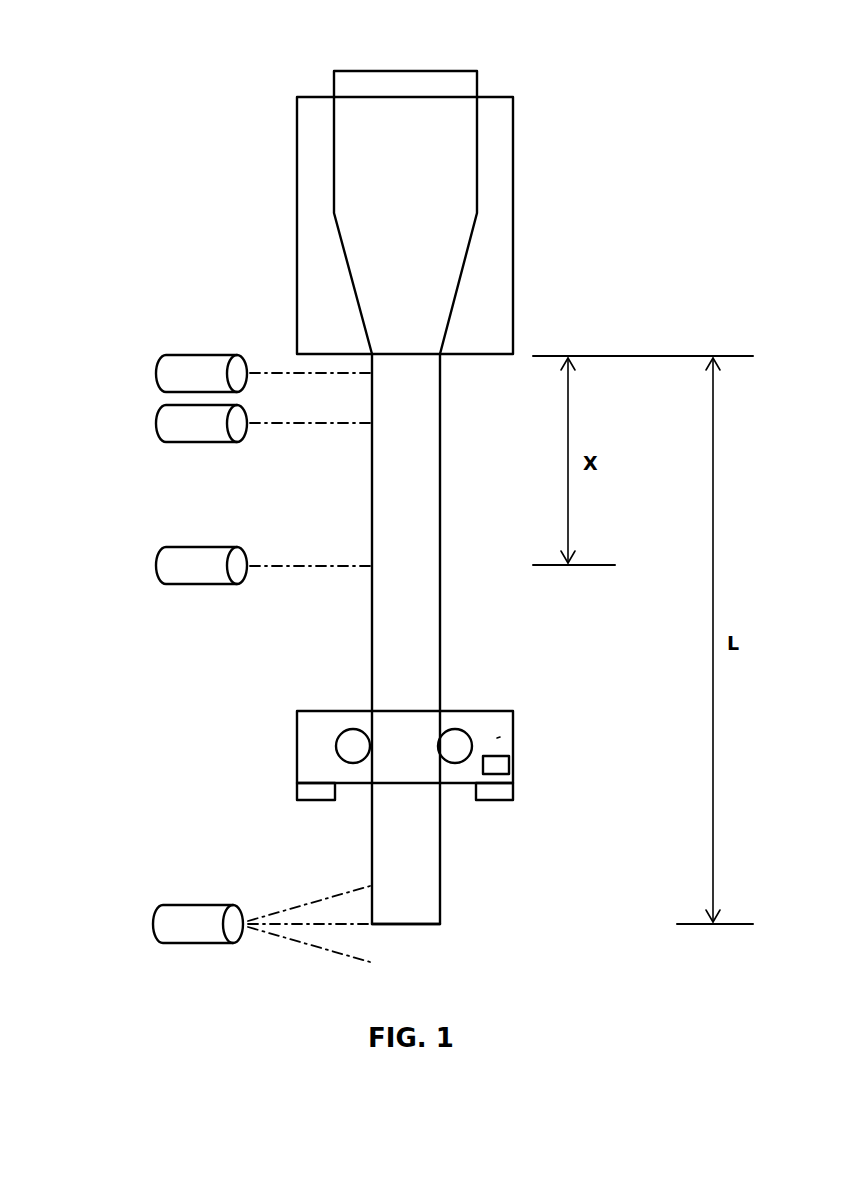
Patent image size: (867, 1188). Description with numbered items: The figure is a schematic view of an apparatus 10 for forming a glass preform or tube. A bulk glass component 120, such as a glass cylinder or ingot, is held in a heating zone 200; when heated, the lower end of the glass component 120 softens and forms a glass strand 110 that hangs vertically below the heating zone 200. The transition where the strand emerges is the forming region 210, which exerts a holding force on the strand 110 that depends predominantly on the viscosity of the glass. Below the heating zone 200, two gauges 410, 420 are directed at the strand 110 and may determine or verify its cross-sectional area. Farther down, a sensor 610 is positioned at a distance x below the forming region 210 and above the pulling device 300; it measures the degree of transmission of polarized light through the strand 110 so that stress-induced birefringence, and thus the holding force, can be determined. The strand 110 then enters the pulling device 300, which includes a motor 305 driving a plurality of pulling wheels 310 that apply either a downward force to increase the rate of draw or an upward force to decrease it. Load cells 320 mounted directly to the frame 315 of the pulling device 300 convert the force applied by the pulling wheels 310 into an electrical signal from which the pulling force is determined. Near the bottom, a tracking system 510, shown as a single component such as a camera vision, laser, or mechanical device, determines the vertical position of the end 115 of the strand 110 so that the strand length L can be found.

The apparatus 10 is at (137, 68).
The heating zone 200 is at (307, 167).
The glass component 120 is at (405, 191).
The glass strand 110 is at (410, 540).
The forming region 210 is at (443, 357).
The end of the strand 115 is at (413, 926).
The gauge 410 is at (172, 374).
The gauge 420 is at (172, 430).
The sensor 610 is at (172, 570).
The tracking system 510 is at (172, 929).
The pulling device 300 is at (289, 709).
The pulling wheels 310 is at (353, 745).
The frame 315 is at (497, 738).
The motor 305 is at (495, 765).
The load cells 320 is at (316, 792).